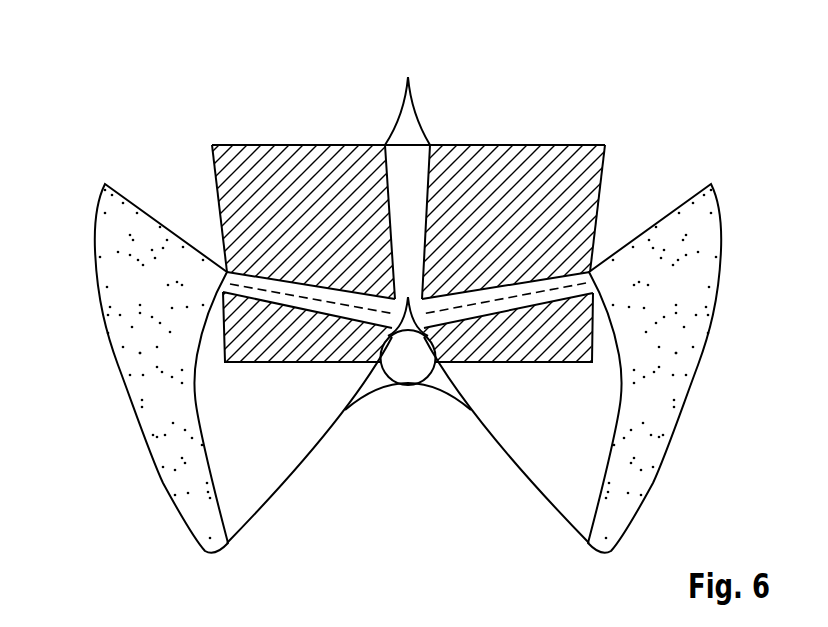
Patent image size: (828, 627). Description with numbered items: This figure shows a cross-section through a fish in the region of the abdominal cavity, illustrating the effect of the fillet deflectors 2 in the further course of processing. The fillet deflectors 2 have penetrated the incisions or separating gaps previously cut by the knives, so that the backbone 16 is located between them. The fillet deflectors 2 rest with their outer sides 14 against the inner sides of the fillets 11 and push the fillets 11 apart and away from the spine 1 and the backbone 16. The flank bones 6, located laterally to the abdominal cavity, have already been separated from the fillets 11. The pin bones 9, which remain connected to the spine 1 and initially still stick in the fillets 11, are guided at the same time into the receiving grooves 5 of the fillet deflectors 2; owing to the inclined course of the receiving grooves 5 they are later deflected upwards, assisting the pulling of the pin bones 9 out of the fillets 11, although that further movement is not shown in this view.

The spine 1 is at (407, 366).
The fillet deflectors 2 is at (522, 147).
The receiving grooves 5 is at (606, 302).
The flank bones 6 is at (312, 452).
The pin bones 9 is at (570, 263).
The fillets 11 is at (107, 242).
The outer sides 14 is at (214, 171).
The backbone 16 is at (422, 200).